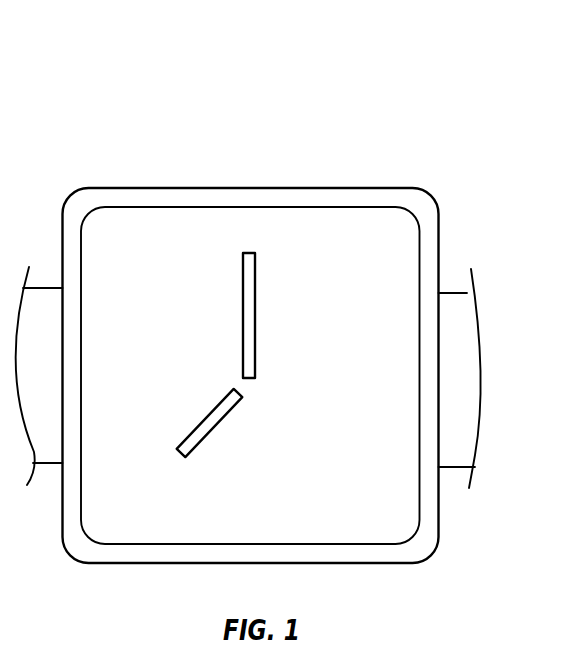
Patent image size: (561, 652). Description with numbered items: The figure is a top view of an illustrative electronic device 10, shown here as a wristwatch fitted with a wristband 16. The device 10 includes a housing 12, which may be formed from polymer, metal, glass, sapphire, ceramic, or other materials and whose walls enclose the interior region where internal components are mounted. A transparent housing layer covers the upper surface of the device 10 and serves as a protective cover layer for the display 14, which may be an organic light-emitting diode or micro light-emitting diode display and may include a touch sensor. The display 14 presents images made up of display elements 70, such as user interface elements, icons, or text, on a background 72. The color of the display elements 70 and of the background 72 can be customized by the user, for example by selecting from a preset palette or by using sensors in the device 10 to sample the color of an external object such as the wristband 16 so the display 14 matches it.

The electronic device 10 is at (485, 69).
The housing 12 is at (250, 200).
The display 14 is at (302, 237).
The wristband 16 is at (40, 305).
The display elements 70 is at (232, 412).
The background 72 is at (131, 245).